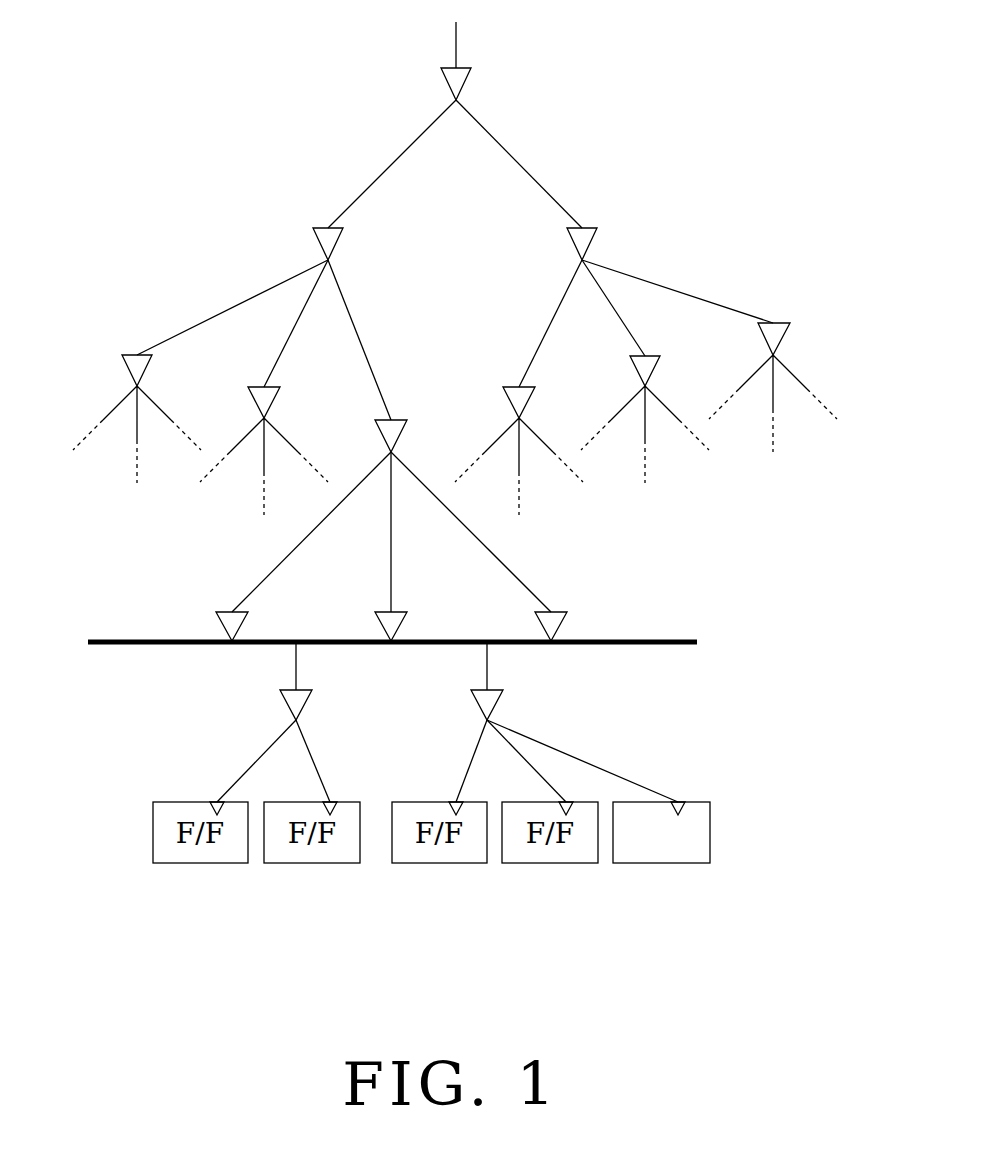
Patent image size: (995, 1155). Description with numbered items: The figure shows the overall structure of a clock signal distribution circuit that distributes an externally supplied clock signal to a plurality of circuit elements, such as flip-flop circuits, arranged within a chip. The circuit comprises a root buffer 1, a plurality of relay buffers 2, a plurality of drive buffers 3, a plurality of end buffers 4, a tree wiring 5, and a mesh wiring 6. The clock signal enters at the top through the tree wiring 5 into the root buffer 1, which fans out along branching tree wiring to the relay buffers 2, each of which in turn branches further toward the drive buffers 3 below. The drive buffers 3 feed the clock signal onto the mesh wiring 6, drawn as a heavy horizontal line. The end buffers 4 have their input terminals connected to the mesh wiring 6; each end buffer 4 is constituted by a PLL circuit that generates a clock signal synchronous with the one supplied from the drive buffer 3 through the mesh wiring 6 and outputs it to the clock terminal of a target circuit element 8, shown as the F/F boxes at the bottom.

The root buffer 1 is at (470, 70).
The relay buffer 2 is at (598, 232).
The drive buffer 3 is at (565, 612).
The end buffer 4 is at (497, 704).
The tree wiring 5 is at (455, 34).
The mesh wiring 6 is at (663, 640).
The circuit element 8 is at (693, 803).